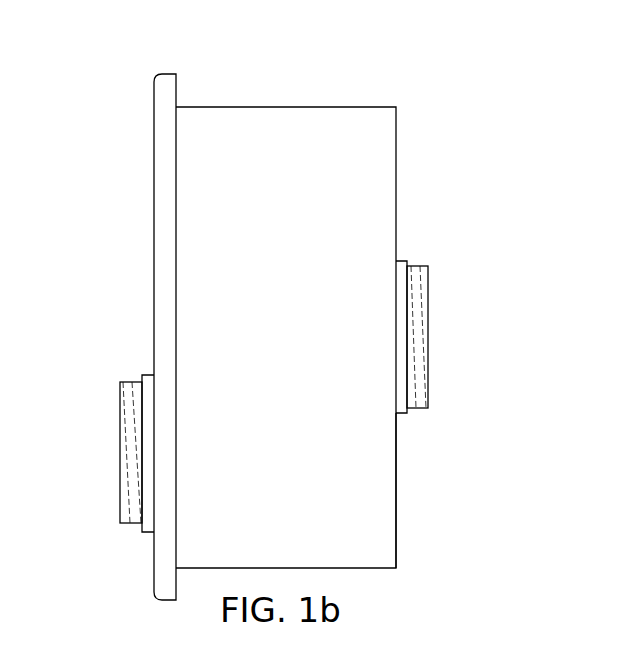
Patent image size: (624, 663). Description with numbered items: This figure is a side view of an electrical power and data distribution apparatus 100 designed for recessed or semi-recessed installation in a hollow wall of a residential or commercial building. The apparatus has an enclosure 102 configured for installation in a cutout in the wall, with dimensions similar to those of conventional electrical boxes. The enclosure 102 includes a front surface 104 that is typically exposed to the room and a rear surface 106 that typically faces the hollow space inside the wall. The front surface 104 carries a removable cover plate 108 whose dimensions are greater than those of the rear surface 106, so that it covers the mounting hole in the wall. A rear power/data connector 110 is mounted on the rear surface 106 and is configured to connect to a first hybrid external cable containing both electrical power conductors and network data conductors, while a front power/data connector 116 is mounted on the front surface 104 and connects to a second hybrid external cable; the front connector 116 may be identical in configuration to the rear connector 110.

The distribution apparatus 100 is at (341, 91).
The enclosure 102 is at (303, 353).
The front surface 104 is at (153, 255).
The rear surface 106 is at (396, 485).
The cover plate 108 is at (162, 117).
The rear power/data connector 110 is at (429, 335).
The front power/data connector 116 is at (121, 451).